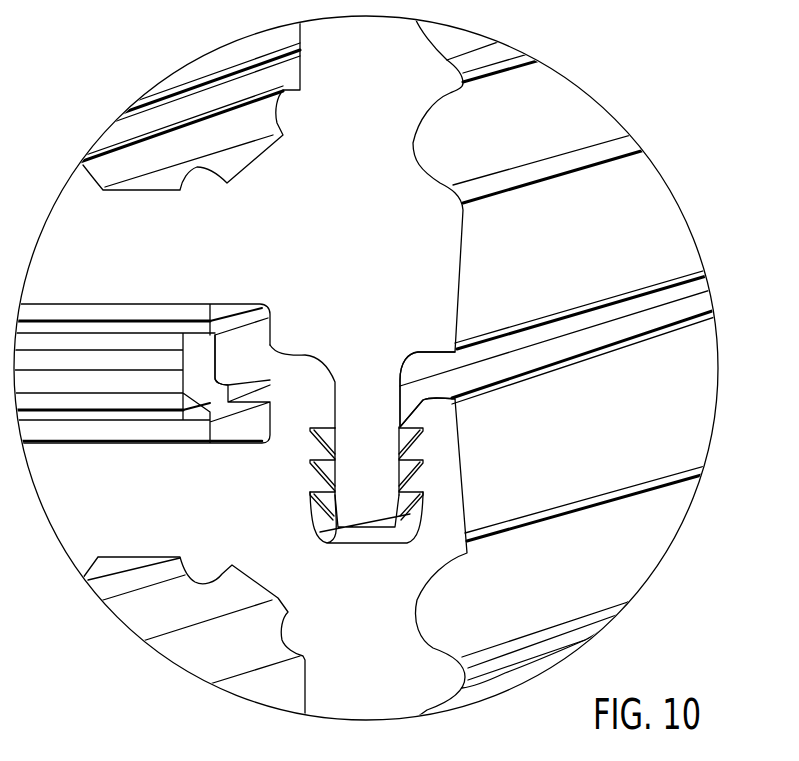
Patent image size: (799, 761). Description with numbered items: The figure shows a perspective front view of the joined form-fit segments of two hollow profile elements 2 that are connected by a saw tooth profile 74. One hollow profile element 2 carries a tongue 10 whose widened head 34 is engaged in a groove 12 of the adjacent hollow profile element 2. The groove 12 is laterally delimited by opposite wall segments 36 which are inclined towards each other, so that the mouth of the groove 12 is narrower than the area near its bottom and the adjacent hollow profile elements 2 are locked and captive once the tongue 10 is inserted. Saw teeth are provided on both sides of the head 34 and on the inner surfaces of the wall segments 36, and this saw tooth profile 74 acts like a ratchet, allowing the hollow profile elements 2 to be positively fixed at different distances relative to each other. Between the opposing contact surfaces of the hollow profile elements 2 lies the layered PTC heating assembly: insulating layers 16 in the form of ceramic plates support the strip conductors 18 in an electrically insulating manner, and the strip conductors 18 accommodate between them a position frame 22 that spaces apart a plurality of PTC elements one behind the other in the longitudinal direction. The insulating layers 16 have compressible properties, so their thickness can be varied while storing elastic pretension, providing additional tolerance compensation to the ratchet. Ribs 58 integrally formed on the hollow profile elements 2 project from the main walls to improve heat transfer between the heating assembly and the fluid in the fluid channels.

The hollow profile element 2 is at (662, 243).
The tongue 10 is at (388, 463).
The groove 12 is at (414, 392).
The insulating layer 16 is at (97, 310).
The strip conductor 18 is at (152, 321).
The position frame 22 is at (250, 340).
The widened head 34 is at (365, 486).
The wall segment 36 is at (388, 497).
The rib 58 is at (105, 570).
The saw tooth profile 74 is at (427, 445).